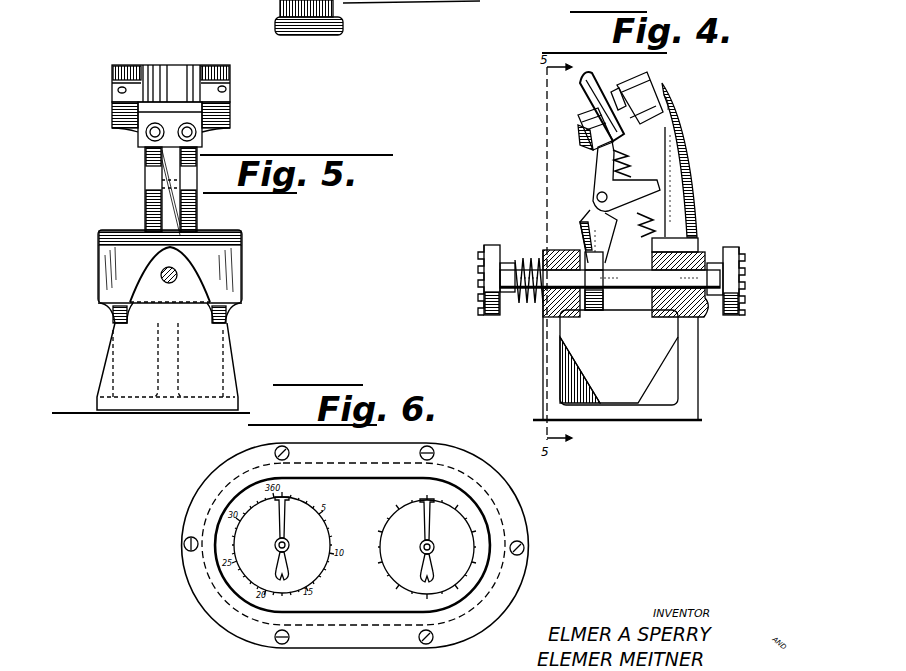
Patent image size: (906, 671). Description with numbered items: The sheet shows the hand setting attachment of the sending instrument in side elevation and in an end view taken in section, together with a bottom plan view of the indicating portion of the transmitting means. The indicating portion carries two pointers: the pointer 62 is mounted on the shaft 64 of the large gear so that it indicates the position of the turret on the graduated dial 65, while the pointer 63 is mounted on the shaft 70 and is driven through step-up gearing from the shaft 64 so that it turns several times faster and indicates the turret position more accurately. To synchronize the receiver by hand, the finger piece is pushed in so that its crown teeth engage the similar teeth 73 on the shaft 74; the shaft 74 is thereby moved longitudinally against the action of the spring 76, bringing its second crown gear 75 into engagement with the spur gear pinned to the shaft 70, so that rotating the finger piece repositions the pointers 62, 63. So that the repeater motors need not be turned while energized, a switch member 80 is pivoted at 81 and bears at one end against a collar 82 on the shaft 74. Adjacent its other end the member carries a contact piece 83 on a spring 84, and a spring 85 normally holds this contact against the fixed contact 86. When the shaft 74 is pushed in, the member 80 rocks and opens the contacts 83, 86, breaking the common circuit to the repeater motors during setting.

In FIG. 6, the indicating pointer 62 is at (432, 530).
In FIG. 6, the indicating pointer 63 is at (285, 525).
In FIG. 6, the shaft 64 is at (420, 547).
In FIG. 6, the graduated dial 65 is at (383, 573).
In FIG. 6, the shaft 70 is at (275, 544).
In FIG. 4, the crown gear teeth 73 is at (485, 315).
In FIG. 5, the shaft 74 is at (166, 283).
In FIG. 4, the shaft 74 is at (525, 275).
In FIG. 4, the second crown gear 75 is at (728, 250).
In FIG. 4, the spring 76 is at (527, 302).
In FIG. 5, the switch member 80 is at (137, 116).
In FIG. 4, the switch member 80 is at (585, 116).
In FIG. 5, the pivot 81 is at (157, 184).
In FIG. 4, the pivot 81 is at (596, 194).
In FIG. 4, the collar 82 is at (597, 309).
In FIG. 5, the contact piece 83 is at (227, 88).
In FIG. 4, the contact piece 83 is at (613, 87).
In FIG. 5, the spring 84 is at (160, 67).
In FIG. 4, the spring 84 is at (585, 83).
In FIG. 4, the spring 85 is at (619, 152).
In FIG. 5, the fixed contact 86 is at (230, 113).
In FIG. 4, the fixed contact 86 is at (628, 112).